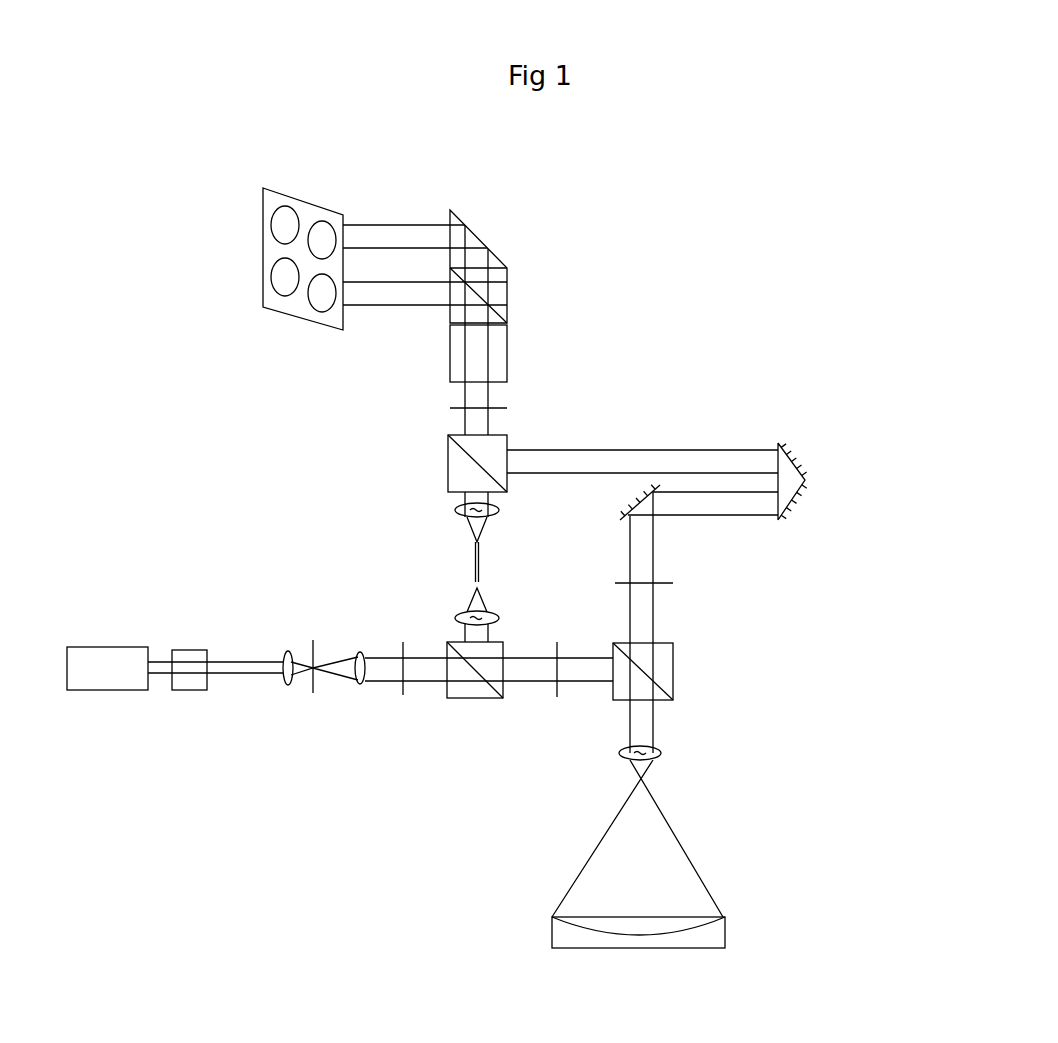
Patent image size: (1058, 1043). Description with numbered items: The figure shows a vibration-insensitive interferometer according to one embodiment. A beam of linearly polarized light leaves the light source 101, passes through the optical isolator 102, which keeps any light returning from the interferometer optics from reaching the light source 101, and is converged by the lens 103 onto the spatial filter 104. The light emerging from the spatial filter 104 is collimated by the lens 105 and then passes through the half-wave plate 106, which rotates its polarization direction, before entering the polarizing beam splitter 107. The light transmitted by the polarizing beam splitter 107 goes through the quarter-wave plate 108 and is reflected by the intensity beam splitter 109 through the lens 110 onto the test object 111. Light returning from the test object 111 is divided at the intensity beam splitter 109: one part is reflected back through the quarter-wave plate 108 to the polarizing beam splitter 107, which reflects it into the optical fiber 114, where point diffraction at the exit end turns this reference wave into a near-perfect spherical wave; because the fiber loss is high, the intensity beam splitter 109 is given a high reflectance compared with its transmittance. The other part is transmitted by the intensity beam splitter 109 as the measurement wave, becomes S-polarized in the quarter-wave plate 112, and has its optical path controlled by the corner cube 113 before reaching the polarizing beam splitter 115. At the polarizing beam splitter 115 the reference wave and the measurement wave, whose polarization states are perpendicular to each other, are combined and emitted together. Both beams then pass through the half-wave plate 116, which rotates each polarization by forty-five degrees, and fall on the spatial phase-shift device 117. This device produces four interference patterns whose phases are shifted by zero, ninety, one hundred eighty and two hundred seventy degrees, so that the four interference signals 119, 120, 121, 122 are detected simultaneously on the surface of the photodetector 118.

The light source 101 is at (108, 690).
The optical isolator 102 is at (187, 690).
The lens 103 is at (288, 687).
The spatial filter 104 is at (313, 633).
The lens 105 is at (358, 692).
The half-wave plate 106 is at (403, 635).
The polarizing beam splitter (PBS) 107 is at (473, 703).
The quarter-wave plate 108 is at (557, 707).
The intensity beam splitter (BS) 109 is at (673, 670).
The lens 110 is at (663, 753).
The test object 111 is at (640, 948).
The quarter-wave plate 112 is at (680, 582).
The corner cube 113 is at (820, 483).
The optical fiber 114 is at (480, 563).
The polarizing beam splitter (PBS) 115 is at (450, 455).
The half-wave plate 116 is at (517, 407).
The spatial phase-shift device 117 is at (487, 240).
The photodetector 118 is at (303, 320).
The interference signal 119 is at (263, 287).
The interference signal 120 is at (317, 320).
The interference signal 121 is at (288, 204).
The interference signal 122 is at (325, 212).